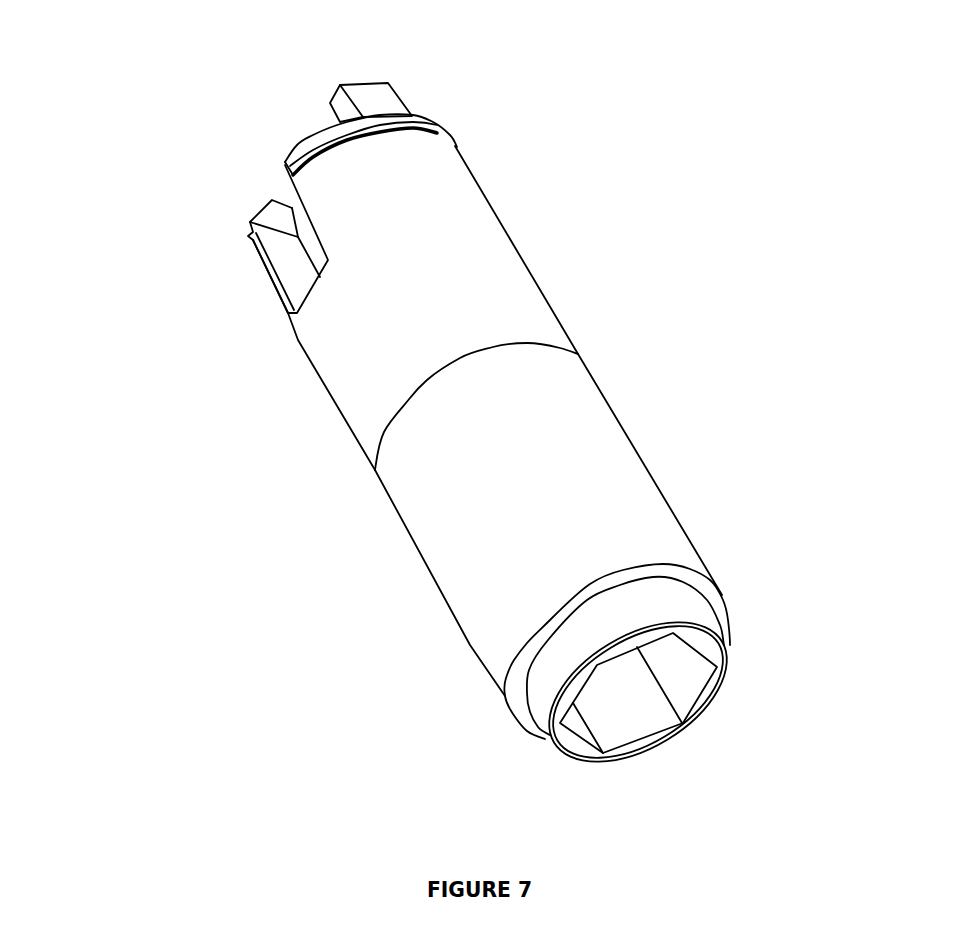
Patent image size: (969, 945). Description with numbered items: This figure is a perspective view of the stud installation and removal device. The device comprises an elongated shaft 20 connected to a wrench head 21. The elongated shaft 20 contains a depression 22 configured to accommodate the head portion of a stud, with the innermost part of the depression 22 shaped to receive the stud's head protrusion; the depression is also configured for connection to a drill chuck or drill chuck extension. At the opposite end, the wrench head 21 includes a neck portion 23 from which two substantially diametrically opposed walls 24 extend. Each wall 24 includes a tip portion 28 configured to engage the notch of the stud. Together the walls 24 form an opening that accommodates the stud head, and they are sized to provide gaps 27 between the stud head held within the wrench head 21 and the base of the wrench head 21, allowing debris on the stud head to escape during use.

The elongated shaft 20 is at (590, 452).
The wrench head 21 is at (393, 358).
The depression 22 is at (640, 675).
The neck portion 23 is at (437, 250).
The wall 24 is at (252, 250).
The gap 27 is at (332, 271).
The tip portion 28 is at (287, 205).